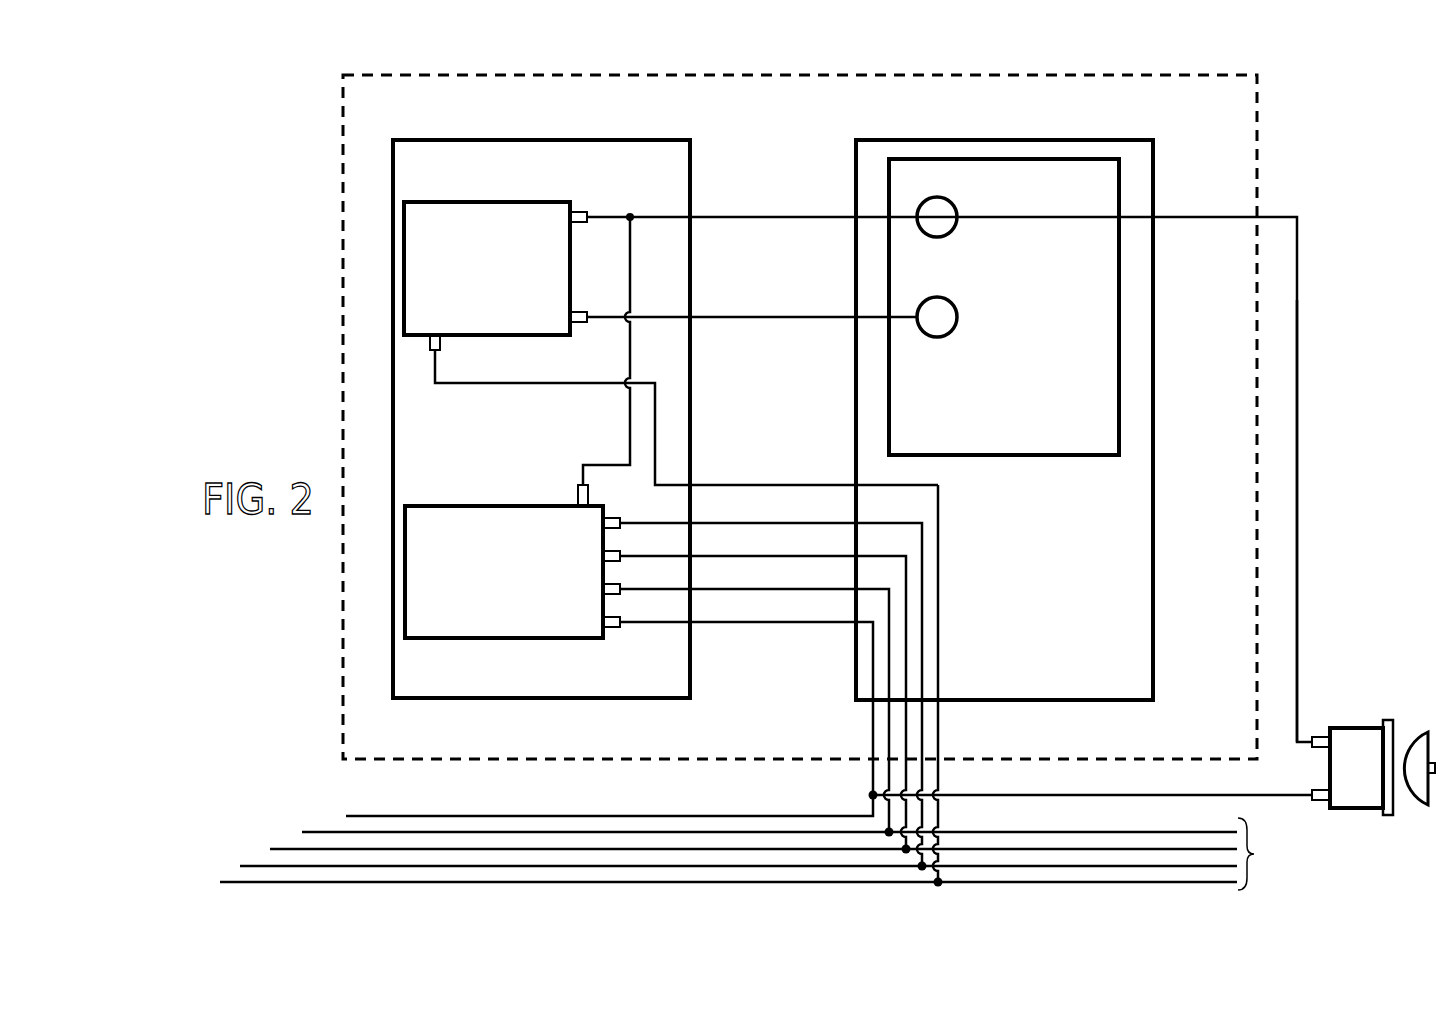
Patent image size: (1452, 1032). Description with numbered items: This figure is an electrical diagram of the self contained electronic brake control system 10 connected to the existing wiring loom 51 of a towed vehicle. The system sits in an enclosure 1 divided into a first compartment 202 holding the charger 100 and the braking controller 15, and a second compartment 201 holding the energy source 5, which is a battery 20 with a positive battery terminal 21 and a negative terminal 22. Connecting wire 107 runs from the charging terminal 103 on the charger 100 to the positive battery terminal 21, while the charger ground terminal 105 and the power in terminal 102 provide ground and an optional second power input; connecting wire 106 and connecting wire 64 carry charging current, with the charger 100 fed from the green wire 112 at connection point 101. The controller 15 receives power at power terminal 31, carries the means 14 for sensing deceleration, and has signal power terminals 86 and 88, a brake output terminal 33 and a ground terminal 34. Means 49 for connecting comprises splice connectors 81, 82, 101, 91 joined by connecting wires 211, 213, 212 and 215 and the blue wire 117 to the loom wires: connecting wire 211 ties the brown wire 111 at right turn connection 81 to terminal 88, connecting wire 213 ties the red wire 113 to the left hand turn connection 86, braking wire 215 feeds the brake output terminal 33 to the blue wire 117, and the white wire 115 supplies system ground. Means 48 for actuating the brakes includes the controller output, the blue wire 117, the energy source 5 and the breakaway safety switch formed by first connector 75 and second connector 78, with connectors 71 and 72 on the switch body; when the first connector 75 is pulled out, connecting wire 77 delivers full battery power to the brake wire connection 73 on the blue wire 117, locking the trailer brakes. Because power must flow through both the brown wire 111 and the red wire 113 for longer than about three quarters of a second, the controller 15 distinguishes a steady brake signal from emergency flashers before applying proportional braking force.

The enclosure 1 is at (1192, 130).
The energy source 5 is at (1341, 148).
The electronic brake control system 10 is at (1342, 96).
The means for sensing deceleration 14 is at (301, 631).
The braking controller 15 is at (522, 623).
The battery 20 is at (1052, 362).
The positive battery terminal 21 is at (942, 207).
The negative terminal 22 is at (946, 312).
The power terminal 31 is at (578, 493).
The brake output terminal 33 is at (615, 632).
The ground terminal 34 is at (615, 598).
The means for actuating the brakes 48 is at (322, 573).
The means for connecting 49 is at (731, 920).
The wiring loom 51 is at (1258, 854).
The connecting wire 64 is at (628, 347).
The connector 71 is at (1317, 740).
The connector 72 is at (1317, 800).
The brake wire connection 73 is at (871, 793).
The first connector 75 is at (1418, 740).
The connecting wire 77 is at (1297, 533).
The second connector 78 is at (1358, 790).
The right turn connection 81 is at (905, 850).
The splice connector 82 is at (921, 867).
The left hand turn connection 86 is at (615, 528).
The signal power terminal 88 is at (615, 562).
The splice connector 91 is at (888, 833).
The charger 100 is at (470, 281).
The connection point 101 is at (940, 883).
The power in terminal 102 is at (430, 345).
The charging terminal 103 is at (585, 212).
The ground terminal 105 is at (580, 312).
The connecting wire 106 is at (553, 385).
The connecting wire 107 is at (760, 217).
The brown wire 111 is at (290, 849).
The green wire 112 is at (252, 883).
The red wire 113 is at (253, 866).
The white wire 115 is at (322, 832).
The blue wire 117 is at (415, 816).
The second compartment 201 is at (1108, 532).
The first compartment 202 is at (442, 157).
The connecting wire 211 is at (907, 560).
The connecting wire 212 is at (940, 577).
The connecting wire 213 is at (923, 638).
The braking wire 215 is at (890, 682).